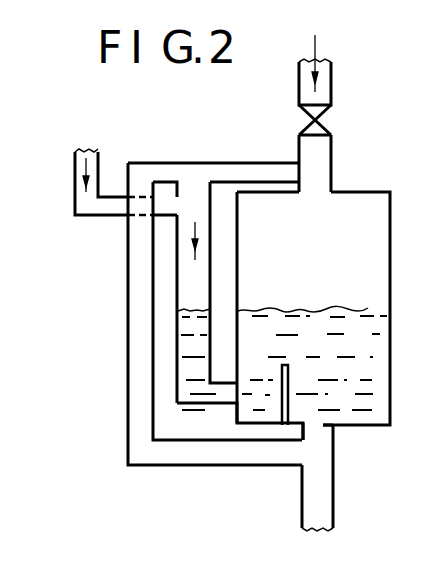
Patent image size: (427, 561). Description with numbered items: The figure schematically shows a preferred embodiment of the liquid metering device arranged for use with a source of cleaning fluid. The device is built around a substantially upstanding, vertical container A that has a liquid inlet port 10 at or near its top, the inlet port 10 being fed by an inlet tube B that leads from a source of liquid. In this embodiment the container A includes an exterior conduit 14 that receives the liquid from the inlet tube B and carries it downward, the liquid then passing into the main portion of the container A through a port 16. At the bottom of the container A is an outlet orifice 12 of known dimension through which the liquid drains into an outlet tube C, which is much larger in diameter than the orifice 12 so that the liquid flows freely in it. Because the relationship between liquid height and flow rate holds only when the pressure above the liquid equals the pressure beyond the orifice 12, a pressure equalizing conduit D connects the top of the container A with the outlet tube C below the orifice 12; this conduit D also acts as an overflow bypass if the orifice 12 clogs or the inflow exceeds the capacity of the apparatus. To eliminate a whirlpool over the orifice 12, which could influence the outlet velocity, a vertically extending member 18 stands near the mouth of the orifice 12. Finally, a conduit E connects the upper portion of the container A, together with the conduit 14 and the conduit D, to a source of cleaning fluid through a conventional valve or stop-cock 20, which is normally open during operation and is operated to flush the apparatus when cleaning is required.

The liquid inlet port 10 is at (176, 207).
The outlet orifice 12 is at (313, 420).
The exterior conduit 14 is at (177, 268).
The port 16 is at (232, 405).
The vertically extending member 18 is at (287, 383).
The valve 20 is at (323, 132).
The container A is at (392, 313).
The inlet tube B is at (73, 184).
The outlet tube C is at (338, 506).
The pressure equalizing conduit D is at (128, 315).
The cleaning fluid conduit E is at (333, 83).